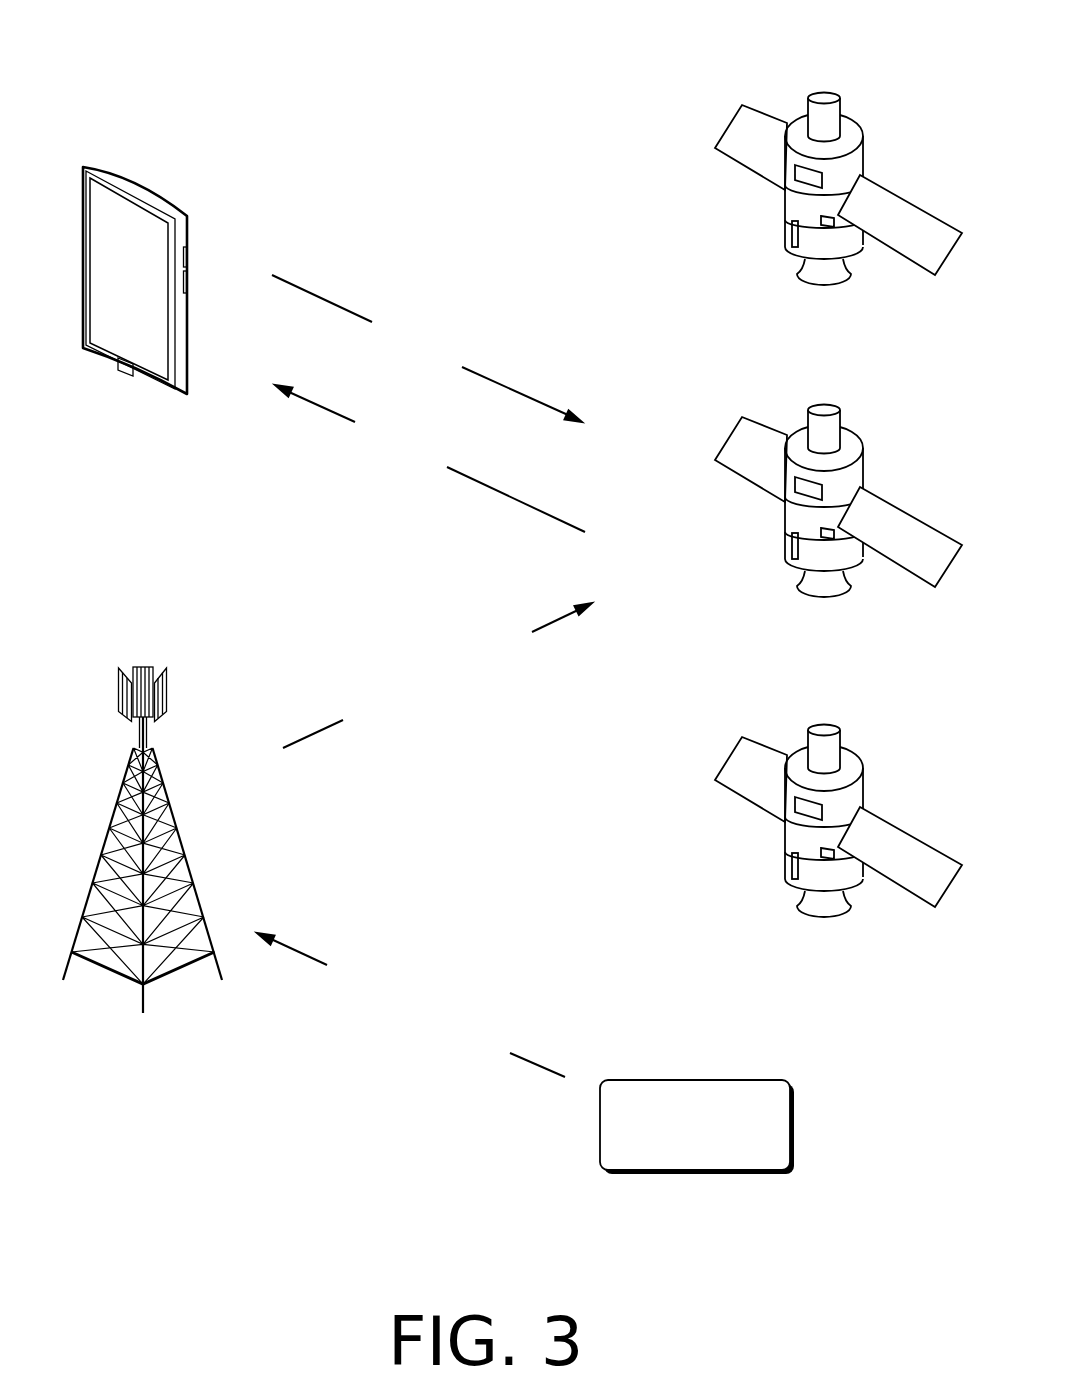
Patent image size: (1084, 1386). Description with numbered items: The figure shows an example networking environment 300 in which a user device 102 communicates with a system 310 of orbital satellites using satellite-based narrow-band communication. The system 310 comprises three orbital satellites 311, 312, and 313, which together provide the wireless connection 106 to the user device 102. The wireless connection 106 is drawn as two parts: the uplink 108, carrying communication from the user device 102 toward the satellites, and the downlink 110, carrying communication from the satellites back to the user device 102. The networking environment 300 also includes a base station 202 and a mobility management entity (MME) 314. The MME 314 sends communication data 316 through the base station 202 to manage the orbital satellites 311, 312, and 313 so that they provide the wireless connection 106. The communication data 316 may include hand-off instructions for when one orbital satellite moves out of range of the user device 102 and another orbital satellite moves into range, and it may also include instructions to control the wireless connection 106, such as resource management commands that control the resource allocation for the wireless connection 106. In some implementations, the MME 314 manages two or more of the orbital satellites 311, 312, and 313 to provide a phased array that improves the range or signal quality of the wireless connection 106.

The networking environment 300 is at (141, 46).
The user device 102 is at (135, 301).
The wireless connection 106 is at (481, 262).
The uplink 108 is at (427, 348).
The downlink 110 is at (430, 458).
The system of orbital satellites 310 is at (687, 101).
The orbital satellite 311 is at (838, 227).
The orbital satellite 312 is at (838, 539).
The orbital satellite 313 is at (838, 859).
The communication data 316 is at (424, 840).
The base station 202 is at (142, 868).
The mobility management entity (MME) 314 is at (697, 1127).